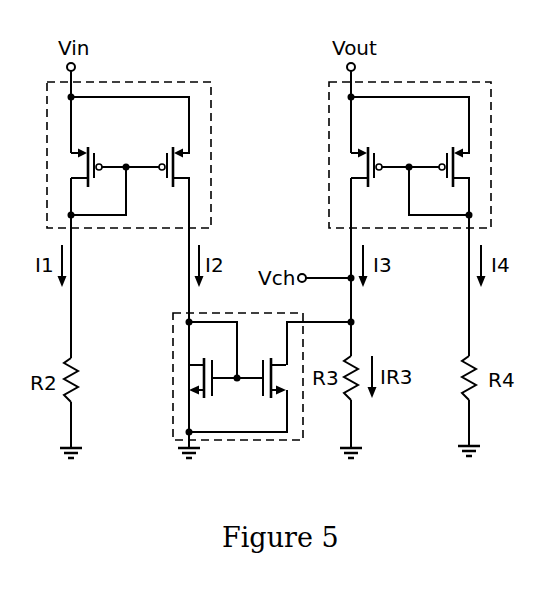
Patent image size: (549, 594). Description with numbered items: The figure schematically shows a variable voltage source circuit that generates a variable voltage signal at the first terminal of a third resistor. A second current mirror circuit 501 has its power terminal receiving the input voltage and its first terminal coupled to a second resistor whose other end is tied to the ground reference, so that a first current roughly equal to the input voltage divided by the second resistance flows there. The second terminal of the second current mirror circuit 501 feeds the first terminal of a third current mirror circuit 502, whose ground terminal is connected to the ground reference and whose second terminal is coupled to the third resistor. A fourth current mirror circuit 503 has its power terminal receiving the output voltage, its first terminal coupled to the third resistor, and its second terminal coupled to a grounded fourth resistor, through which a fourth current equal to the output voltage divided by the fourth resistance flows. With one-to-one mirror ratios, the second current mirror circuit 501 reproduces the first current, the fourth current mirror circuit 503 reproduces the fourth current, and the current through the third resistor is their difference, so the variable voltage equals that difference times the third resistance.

The second current mirror circuit 501 is at (195, 65).
The third current mirror circuit 502 is at (173, 328).
The fourth current mirror circuit 503 is at (475, 65).